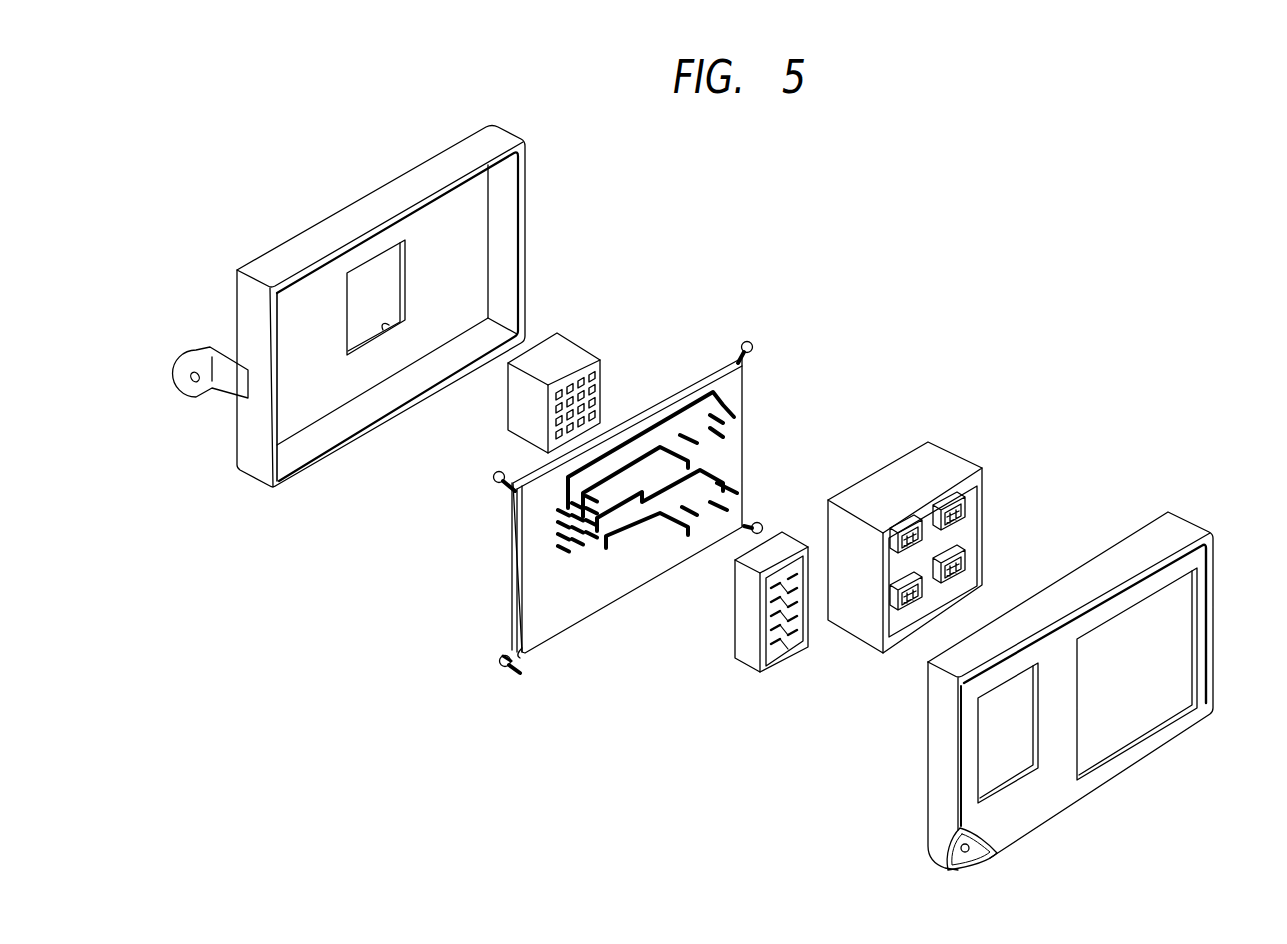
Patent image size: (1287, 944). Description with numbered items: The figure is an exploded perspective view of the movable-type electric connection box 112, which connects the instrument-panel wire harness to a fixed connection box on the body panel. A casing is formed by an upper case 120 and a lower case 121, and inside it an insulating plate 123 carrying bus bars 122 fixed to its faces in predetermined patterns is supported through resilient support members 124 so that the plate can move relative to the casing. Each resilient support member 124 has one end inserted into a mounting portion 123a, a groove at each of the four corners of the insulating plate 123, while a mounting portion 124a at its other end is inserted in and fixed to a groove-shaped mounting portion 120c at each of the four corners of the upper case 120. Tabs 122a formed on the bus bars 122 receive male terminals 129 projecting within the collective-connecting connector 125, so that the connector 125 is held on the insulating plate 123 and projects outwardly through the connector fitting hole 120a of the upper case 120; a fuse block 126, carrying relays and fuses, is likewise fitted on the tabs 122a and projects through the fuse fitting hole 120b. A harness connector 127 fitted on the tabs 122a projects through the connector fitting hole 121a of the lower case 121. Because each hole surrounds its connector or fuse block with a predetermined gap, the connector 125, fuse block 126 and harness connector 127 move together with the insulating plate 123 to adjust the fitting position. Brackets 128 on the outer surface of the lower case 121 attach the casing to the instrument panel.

The movable-type electric connection box 112 is at (880, 196).
The upper case 120 is at (1168, 511).
The connector fitting hole 120a is at (1148, 712).
The fuse fitting hole 120b is at (983, 769).
The mounting portion 120c is at (969, 867).
The lower case 121 is at (247, 478).
The connector fitting hole 121a is at (393, 327).
The bus bars 122 is at (625, 573).
The tabs 122a is at (732, 413).
The insulating plate 123 is at (509, 609).
The mounting portion 123a is at (528, 650).
The resilient support member 124 is at (748, 343).
The mounting portion 124a is at (505, 664).
The collective-connecting connector 125 is at (962, 451).
The fuse block 126 is at (746, 664).
The harness connector 127 is at (575, 342).
The brackets 128 is at (187, 357).
The male terminals 129 is at (912, 607).